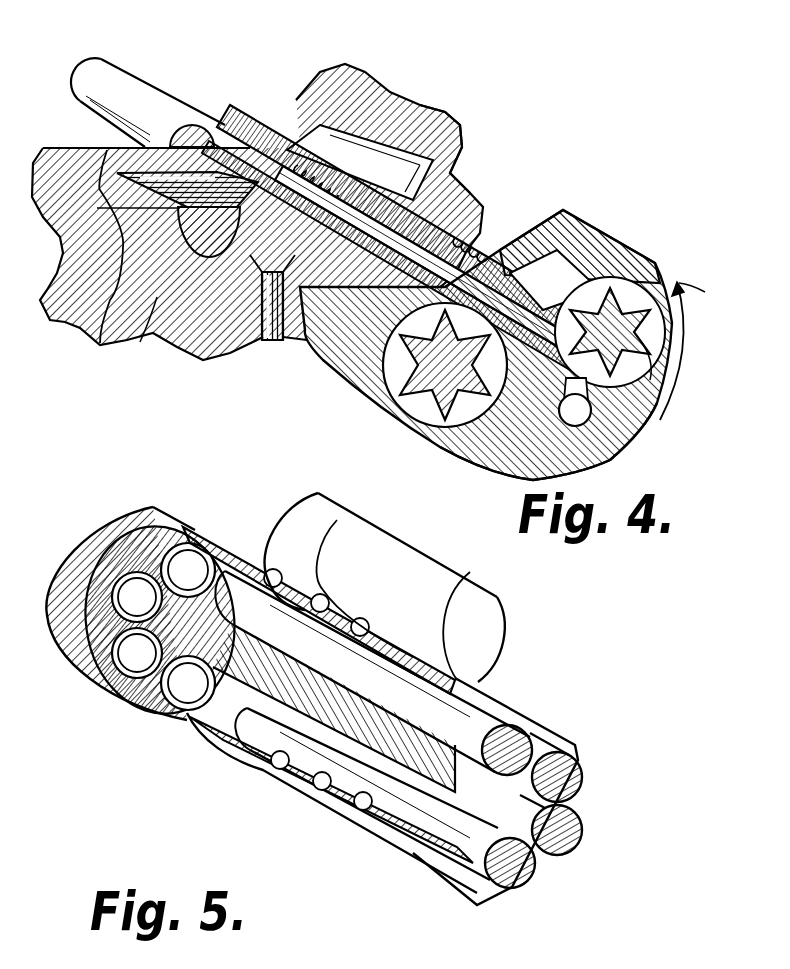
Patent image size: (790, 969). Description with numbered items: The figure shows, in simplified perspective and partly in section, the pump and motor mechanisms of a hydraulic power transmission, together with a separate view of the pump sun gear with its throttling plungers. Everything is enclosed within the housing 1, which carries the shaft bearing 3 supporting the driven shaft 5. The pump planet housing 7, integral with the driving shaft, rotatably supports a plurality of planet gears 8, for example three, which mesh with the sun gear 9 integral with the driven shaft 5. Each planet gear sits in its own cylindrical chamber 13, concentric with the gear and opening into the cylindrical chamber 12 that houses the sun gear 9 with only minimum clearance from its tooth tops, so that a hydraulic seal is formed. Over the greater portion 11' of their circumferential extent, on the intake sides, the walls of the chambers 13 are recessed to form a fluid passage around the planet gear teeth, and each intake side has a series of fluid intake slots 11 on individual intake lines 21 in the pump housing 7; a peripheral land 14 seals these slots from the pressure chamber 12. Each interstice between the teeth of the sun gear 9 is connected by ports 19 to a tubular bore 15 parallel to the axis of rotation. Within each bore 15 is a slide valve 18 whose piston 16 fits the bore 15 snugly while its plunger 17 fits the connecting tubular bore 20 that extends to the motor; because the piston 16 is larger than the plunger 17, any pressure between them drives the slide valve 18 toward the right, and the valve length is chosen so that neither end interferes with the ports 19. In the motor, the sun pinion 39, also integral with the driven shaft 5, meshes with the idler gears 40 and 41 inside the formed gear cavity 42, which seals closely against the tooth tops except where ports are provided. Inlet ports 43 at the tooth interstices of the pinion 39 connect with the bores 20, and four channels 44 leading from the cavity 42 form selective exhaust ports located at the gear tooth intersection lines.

In FIG. 4, the housing 1 is at (155, 300).
In FIG. 4, the shaft bearing 3 is at (270, 138).
In FIG. 4, the driven shaft 5 is at (108, 80).
In FIG. 4, the pump planet housing 7 is at (605, 420).
In FIG. 4, the planet gears 8 is at (335, 420).
In FIG. 4, the sun gear 9 is at (462, 455).
In FIG. 5, the sun gear 9 is at (462, 625).
In FIG. 4, the fluid intake slots 11 is at (649, 387).
In FIG. 4, the greater portion of circumferential extent 11' is at (697, 357).
In FIG. 4, the cylindrical chamber 12 is at (585, 455).
In FIG. 4, the cylindrical portion or chamber 13 is at (415, 440).
In FIG. 4, the peripheral land 14 is at (570, 258).
In FIG. 5, the tubular bore 15 is at (226, 548).
In FIG. 5, the piston 16 is at (470, 690).
In FIG. 5, the plunger 17 is at (230, 565).
In FIG. 5, the slide valve 18 is at (275, 762).
In FIG. 4, the ports 19 is at (498, 252).
In FIG. 5, the ports 19 is at (320, 595).
In FIG. 4, the tubular bore 20 is at (495, 245).
In FIG. 5, the tubular bore 20 is at (165, 510).
In FIG. 4, the intake lines 21 is at (580, 412).
In FIG. 4, the sun pinion 39 is at (228, 178).
In FIG. 4, the idler gear 40 is at (425, 108).
In FIG. 4, the idler gear 41 is at (98, 332).
In FIG. 4, the gear cavity 42 is at (130, 172).
In FIG. 4, the inlet ports 43 is at (348, 66).
In FIG. 4, the channels 44 is at (268, 345).